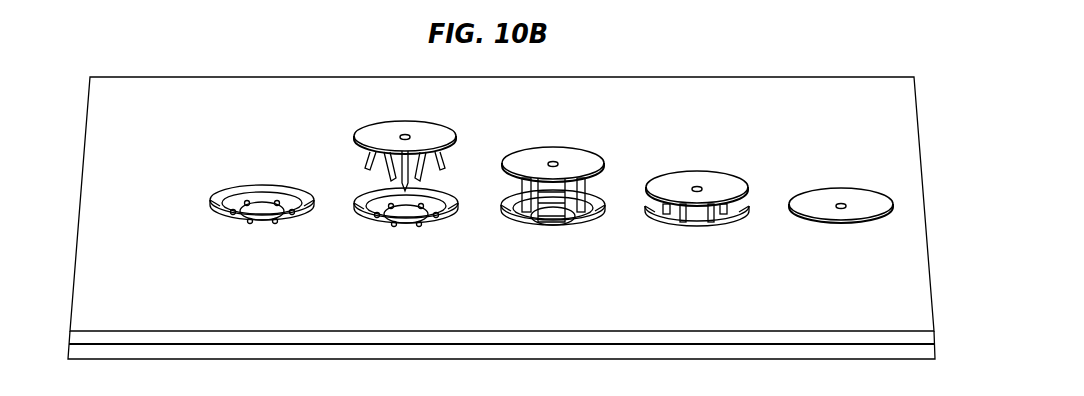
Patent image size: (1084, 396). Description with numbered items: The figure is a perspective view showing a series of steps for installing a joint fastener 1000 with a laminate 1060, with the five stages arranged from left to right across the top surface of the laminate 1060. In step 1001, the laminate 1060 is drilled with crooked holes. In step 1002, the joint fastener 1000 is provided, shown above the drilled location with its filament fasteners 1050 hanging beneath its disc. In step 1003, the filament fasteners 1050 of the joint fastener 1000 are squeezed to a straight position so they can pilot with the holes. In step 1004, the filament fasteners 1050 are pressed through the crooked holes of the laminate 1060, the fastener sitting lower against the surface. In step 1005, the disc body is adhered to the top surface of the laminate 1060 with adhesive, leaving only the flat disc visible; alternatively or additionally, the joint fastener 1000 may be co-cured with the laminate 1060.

The joint fastener 1000 is at (374, 128).
The step of drilling crooked holes 1001 is at (258, 231).
The step of providing joint fastener 1002 is at (403, 231).
The step of squeezing filament fasteners 1003 is at (548, 230).
The step of pressing filament fasteners 1004 is at (690, 230).
The step of adhering disc body 1005 is at (838, 236).
The filament fasteners 1050 is at (446, 161).
The laminate 1060 is at (788, 95).